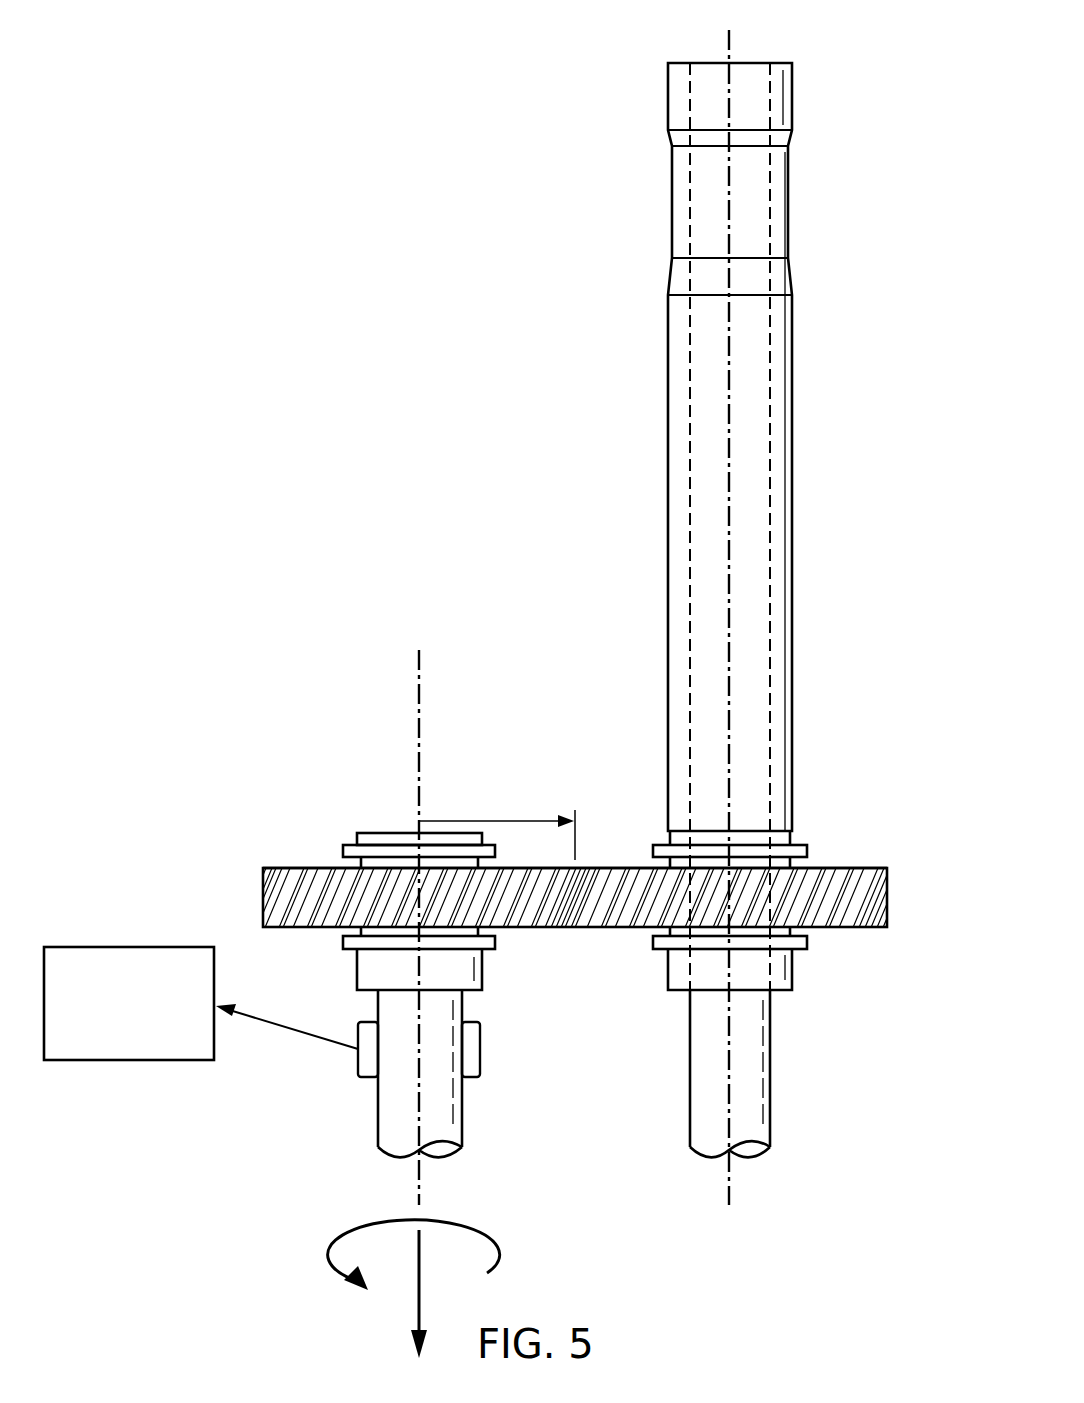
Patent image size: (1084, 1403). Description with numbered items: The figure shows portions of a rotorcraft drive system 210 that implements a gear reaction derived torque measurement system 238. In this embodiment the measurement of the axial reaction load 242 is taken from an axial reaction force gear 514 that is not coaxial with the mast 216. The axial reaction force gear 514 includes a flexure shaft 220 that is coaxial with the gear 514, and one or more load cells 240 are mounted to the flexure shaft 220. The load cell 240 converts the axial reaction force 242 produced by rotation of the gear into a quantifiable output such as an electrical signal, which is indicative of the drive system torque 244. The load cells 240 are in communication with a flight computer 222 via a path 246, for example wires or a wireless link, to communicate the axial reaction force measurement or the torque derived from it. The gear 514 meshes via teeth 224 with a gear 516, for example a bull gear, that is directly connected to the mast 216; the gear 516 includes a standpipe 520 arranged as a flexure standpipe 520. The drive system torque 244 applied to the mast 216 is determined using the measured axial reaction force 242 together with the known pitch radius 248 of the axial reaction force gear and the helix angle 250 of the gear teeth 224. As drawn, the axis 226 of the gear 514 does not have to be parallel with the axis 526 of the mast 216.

The rotorcraft drive system 210 is at (204, 68).
The axis of mast 526 is at (731, 46).
The mast 216 is at (793, 362).
The standpipe 520 is at (767, 470).
The axis of gear 226 is at (417, 673).
The pitch radius 248 is at (521, 818).
The torque measurement system 238 is at (142, 829).
The axial reaction force gear 514 is at (303, 866).
The gear 516 is at (632, 864).
The gear teeth 224 is at (848, 890).
The helix angle 250 is at (546, 908).
The flight computer 222 is at (128, 1062).
The path 246 is at (270, 1024).
The load cell 240 is at (357, 1068).
The flexure shaft 220 is at (463, 1105).
The drive system torque 244 is at (333, 1250).
The axial reaction force 242 is at (417, 1312).